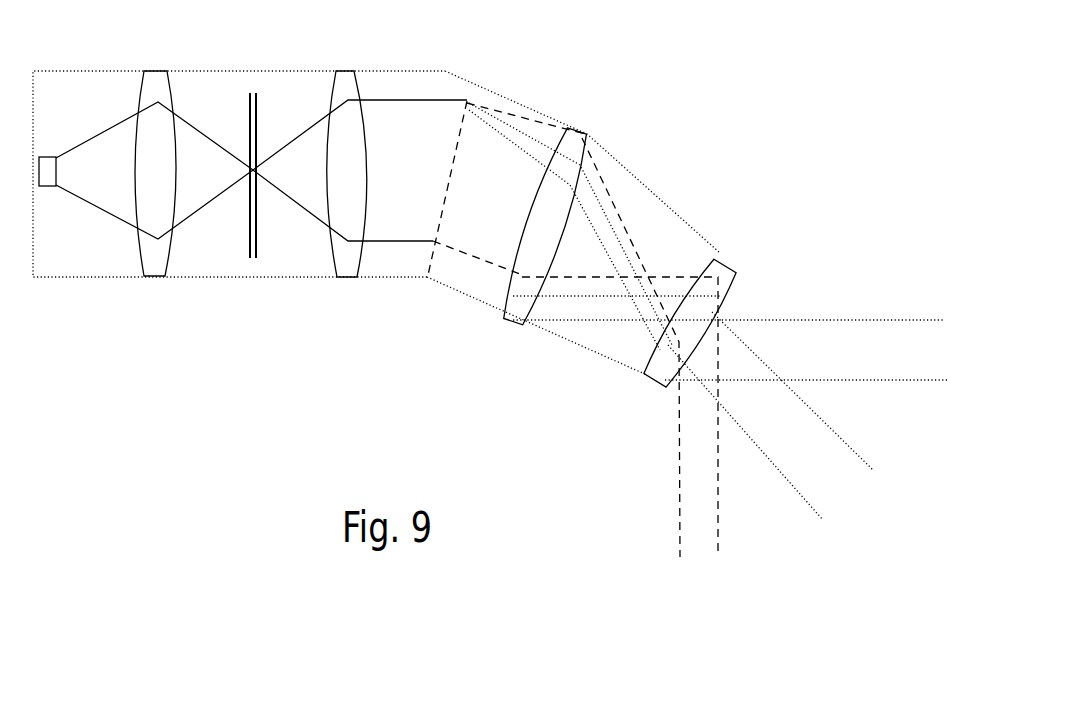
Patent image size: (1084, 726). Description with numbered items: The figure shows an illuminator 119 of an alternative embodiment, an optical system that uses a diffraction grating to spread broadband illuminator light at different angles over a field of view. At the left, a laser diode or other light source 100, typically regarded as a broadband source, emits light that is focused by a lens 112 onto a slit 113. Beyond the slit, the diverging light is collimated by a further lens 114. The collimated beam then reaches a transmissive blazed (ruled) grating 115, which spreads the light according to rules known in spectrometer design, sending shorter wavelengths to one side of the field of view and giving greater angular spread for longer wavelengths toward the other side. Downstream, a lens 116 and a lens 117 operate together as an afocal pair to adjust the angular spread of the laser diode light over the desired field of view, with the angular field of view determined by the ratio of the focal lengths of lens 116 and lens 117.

The light source 100 is at (53, 157).
The lens 112 is at (173, 90).
The slit 113 is at (252, 92).
The lens 114 is at (357, 82).
The transmissive blazed grating 115 is at (468, 98).
The lens 116 is at (563, 135).
The lens 117 is at (713, 258).
The illuminator 119 is at (88, 70).